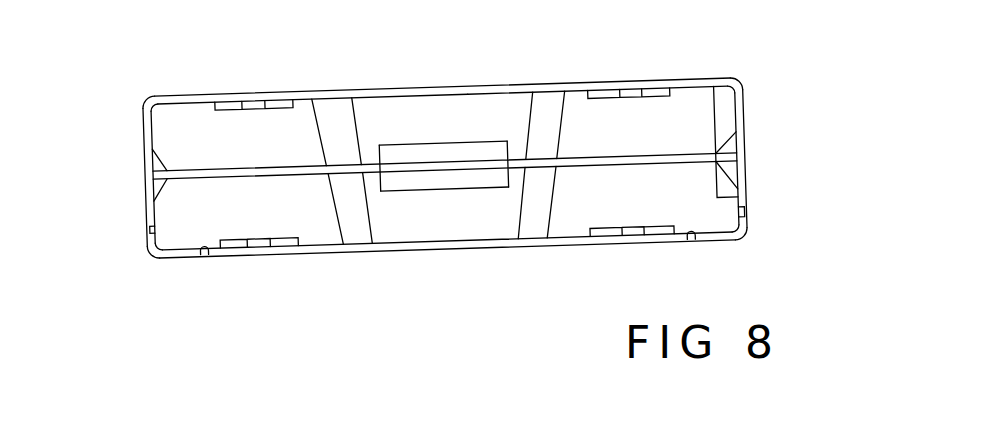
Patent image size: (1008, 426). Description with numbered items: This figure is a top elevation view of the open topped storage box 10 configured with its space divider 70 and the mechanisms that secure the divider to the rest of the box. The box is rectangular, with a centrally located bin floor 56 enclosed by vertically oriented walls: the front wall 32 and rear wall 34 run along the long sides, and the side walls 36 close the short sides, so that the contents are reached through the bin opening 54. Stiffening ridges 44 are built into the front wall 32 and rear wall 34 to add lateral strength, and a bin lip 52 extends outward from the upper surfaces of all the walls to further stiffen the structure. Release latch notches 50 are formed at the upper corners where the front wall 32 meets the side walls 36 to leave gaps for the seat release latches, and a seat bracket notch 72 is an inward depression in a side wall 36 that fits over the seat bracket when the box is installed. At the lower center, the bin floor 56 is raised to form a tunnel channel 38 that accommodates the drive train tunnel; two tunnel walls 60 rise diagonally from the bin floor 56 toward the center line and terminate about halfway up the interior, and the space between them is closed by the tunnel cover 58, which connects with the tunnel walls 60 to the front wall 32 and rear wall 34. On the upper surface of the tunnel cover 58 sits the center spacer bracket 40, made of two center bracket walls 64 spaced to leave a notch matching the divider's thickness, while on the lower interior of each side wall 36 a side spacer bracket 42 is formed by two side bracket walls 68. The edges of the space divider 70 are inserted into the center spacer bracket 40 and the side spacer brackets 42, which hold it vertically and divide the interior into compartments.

The protective cover assembly 10 is at (447, 184).
The front wall 32 is at (578, 248).
The rear wall 34 is at (246, 103).
The side wall 36 is at (143, 125).
The tunnel channel 38 is at (404, 122).
The center spacer bracket 40 is at (415, 193).
The side spacer bracket 42 is at (144, 173).
The stiffening ridge 44 is at (266, 108).
The release latch notch 50 is at (168, 262).
The bin lip 52 is at (478, 87).
The bin opening 54 is at (177, 123).
The bin floor 56 is at (183, 215).
The tunnel cover 58 is at (507, 122).
The tunnel wall 60 is at (330, 113).
The center bracket wall 64 is at (449, 186).
The side bracket wall 68 is at (173, 192).
The space divider 70 is at (675, 152).
The seat bracket notch 72 is at (722, 103).